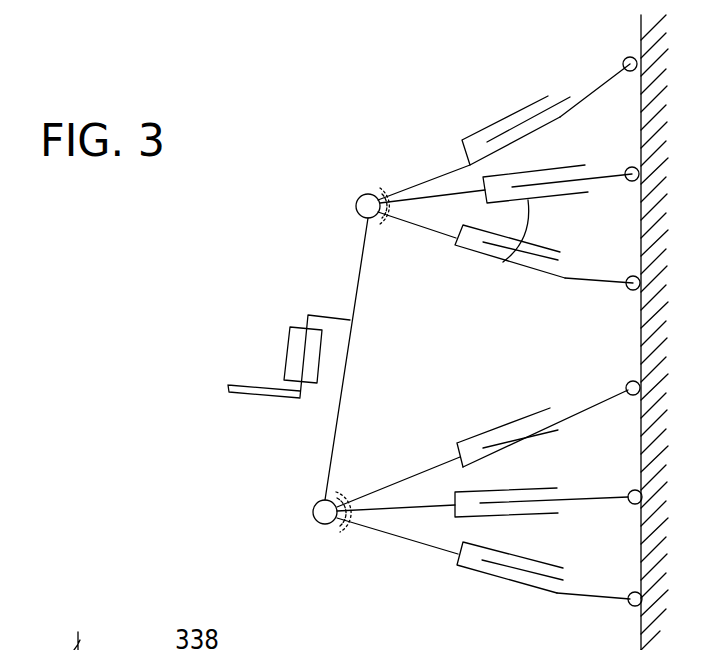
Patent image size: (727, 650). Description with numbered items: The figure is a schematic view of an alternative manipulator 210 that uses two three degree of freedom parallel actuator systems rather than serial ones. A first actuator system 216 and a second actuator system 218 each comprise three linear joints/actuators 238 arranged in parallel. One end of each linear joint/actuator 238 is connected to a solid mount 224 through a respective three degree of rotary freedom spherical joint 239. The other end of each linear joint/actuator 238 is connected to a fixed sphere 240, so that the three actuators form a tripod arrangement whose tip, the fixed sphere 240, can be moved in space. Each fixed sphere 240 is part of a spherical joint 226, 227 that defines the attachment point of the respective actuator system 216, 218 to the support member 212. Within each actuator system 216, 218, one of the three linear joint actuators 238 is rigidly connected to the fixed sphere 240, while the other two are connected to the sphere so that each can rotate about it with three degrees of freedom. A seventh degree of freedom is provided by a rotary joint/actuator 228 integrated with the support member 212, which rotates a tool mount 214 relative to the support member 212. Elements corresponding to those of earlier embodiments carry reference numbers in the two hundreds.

The vibration isolation/positioning assembly 210 is at (265, 449).
The support member 212 is at (350, 357).
The tool mount 214 is at (252, 393).
The first actuator system 216 is at (450, 102).
The second actuator system 218 is at (420, 572).
The solid mount 224 is at (640, 333).
The spherical joint 226 is at (352, 200).
The spherical joint 227 is at (311, 505).
The rotary joint/actuator 228 is at (275, 352).
The linear joint/actuator 238 is at (508, 118).
The spherical joint 239 is at (625, 58).
The fixed sphere 240 is at (363, 216).